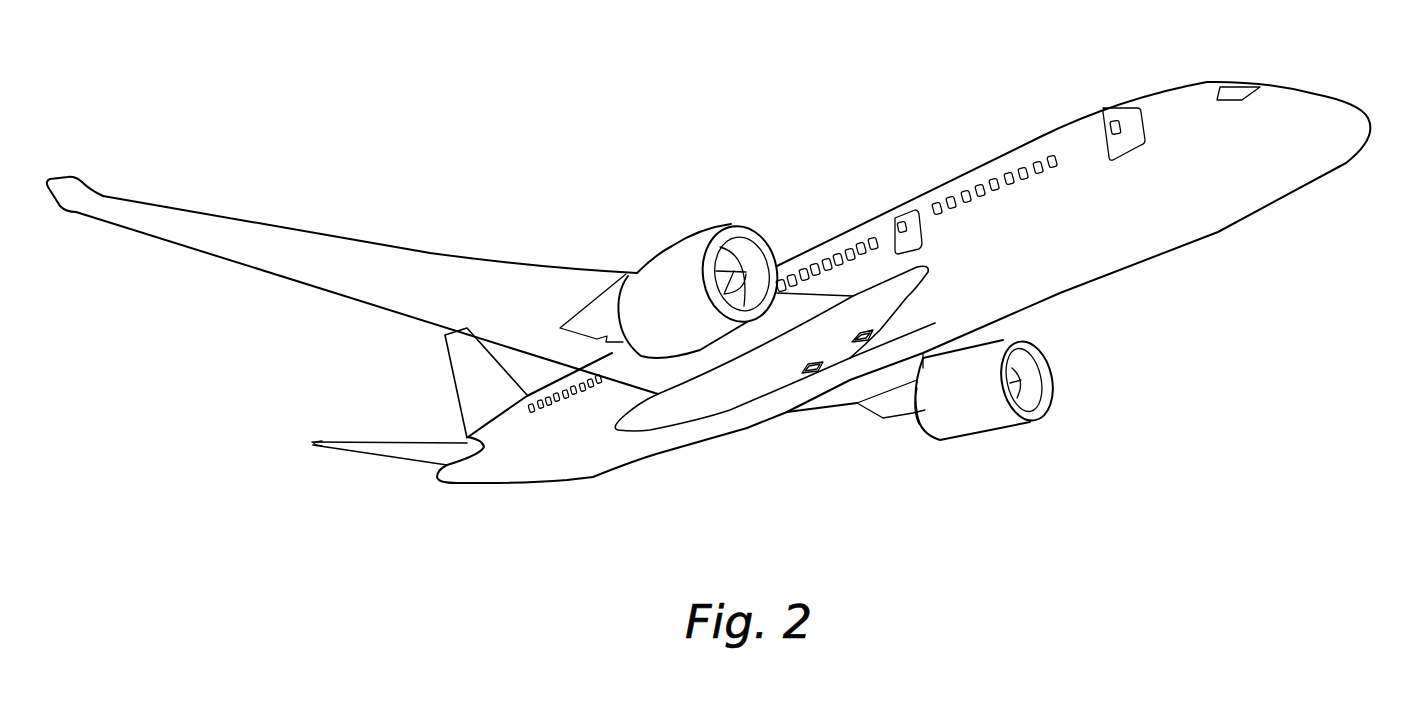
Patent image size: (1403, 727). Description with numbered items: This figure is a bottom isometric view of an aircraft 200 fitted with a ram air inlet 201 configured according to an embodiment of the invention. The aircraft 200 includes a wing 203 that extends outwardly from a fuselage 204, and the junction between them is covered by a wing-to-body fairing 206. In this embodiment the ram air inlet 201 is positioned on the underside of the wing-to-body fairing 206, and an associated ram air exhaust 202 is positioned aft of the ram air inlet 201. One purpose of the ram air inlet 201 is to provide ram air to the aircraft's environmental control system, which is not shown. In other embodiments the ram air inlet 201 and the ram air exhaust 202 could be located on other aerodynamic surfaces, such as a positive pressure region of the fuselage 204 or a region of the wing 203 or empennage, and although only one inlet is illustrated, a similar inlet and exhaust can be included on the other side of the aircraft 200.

The aircraft 200 is at (1297, 98).
The ram air inlet 201 is at (868, 343).
The ram air exhaust 202 is at (818, 377).
The wing 203 is at (380, 248).
The fuselage 204 is at (1175, 83).
The wing-to-body fairing 206 is at (872, 293).